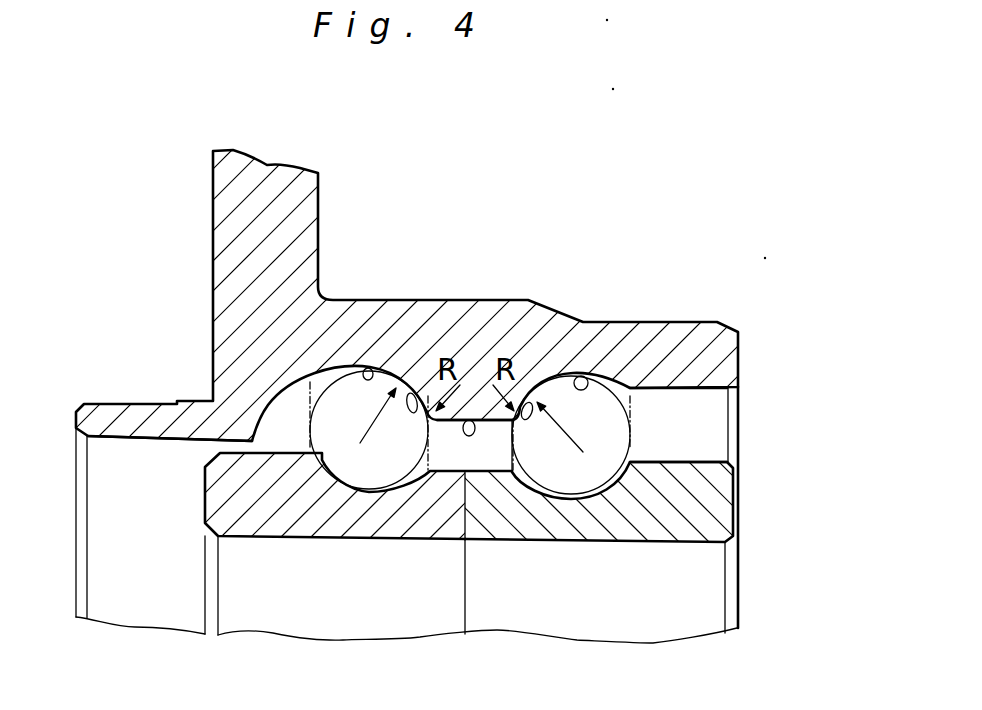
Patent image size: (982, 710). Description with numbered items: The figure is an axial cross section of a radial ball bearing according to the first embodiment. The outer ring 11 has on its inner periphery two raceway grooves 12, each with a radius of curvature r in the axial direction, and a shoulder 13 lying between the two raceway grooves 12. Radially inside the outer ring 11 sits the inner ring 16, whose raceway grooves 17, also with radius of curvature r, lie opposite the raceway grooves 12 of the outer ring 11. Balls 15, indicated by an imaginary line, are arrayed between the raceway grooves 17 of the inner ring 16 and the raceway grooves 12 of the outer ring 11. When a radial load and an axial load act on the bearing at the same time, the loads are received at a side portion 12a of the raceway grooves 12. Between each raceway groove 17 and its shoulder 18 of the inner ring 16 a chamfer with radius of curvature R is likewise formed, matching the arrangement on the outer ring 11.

The outer ring 11 is at (525, 278).
The raceway grooves 12 is at (369, 368).
The side portion 12a is at (413, 393).
The shoulder 13 is at (477, 420).
The balls 15 is at (630, 422).
The inner ring 16 is at (725, 558).
The raceway grooves 17 is at (318, 478).
The shoulder 18 is at (267, 427).